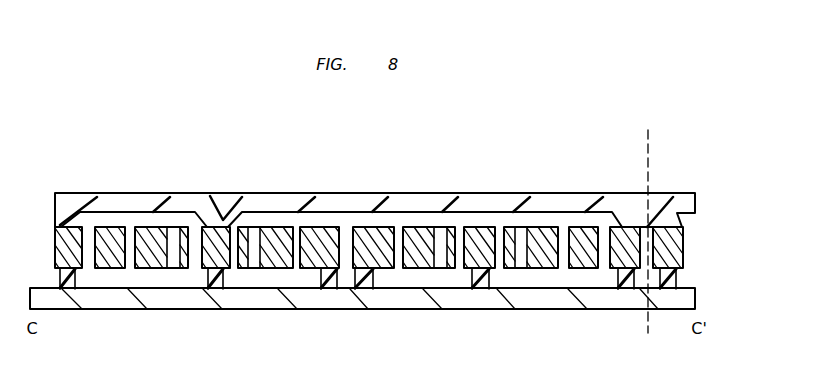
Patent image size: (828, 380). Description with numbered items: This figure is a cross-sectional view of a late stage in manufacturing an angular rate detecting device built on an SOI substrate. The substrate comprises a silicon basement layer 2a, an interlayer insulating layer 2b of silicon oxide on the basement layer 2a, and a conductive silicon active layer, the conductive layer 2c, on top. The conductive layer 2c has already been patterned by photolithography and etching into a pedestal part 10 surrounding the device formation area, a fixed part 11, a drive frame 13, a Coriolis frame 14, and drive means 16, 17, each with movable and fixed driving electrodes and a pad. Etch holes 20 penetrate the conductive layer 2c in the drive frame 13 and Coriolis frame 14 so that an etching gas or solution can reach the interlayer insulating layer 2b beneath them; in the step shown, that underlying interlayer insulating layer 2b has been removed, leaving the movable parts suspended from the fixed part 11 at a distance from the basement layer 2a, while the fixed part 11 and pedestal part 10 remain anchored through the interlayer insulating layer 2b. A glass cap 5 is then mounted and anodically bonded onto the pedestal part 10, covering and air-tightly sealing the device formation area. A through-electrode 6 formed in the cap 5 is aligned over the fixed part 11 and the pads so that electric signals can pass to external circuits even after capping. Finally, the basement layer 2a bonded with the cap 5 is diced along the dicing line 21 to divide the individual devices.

The basement layer 2a is at (695, 299).
The interlayer insulating layer 2b is at (672, 279).
The conductive layer 2c is at (697, 240).
The cap 5 is at (695, 202).
The through-electrode 6 is at (220, 210).
The pedestal part 10 is at (668, 233).
The fixed part 11 is at (476, 233).
The drive frame 13 is at (543, 233).
The Coriolis frame 14 is at (585, 233).
The drive means 16 is at (319, 222).
The drive means 17 is at (373, 222).
The etch hole 20 is at (523, 233).
The dicing line 21 is at (647, 325).